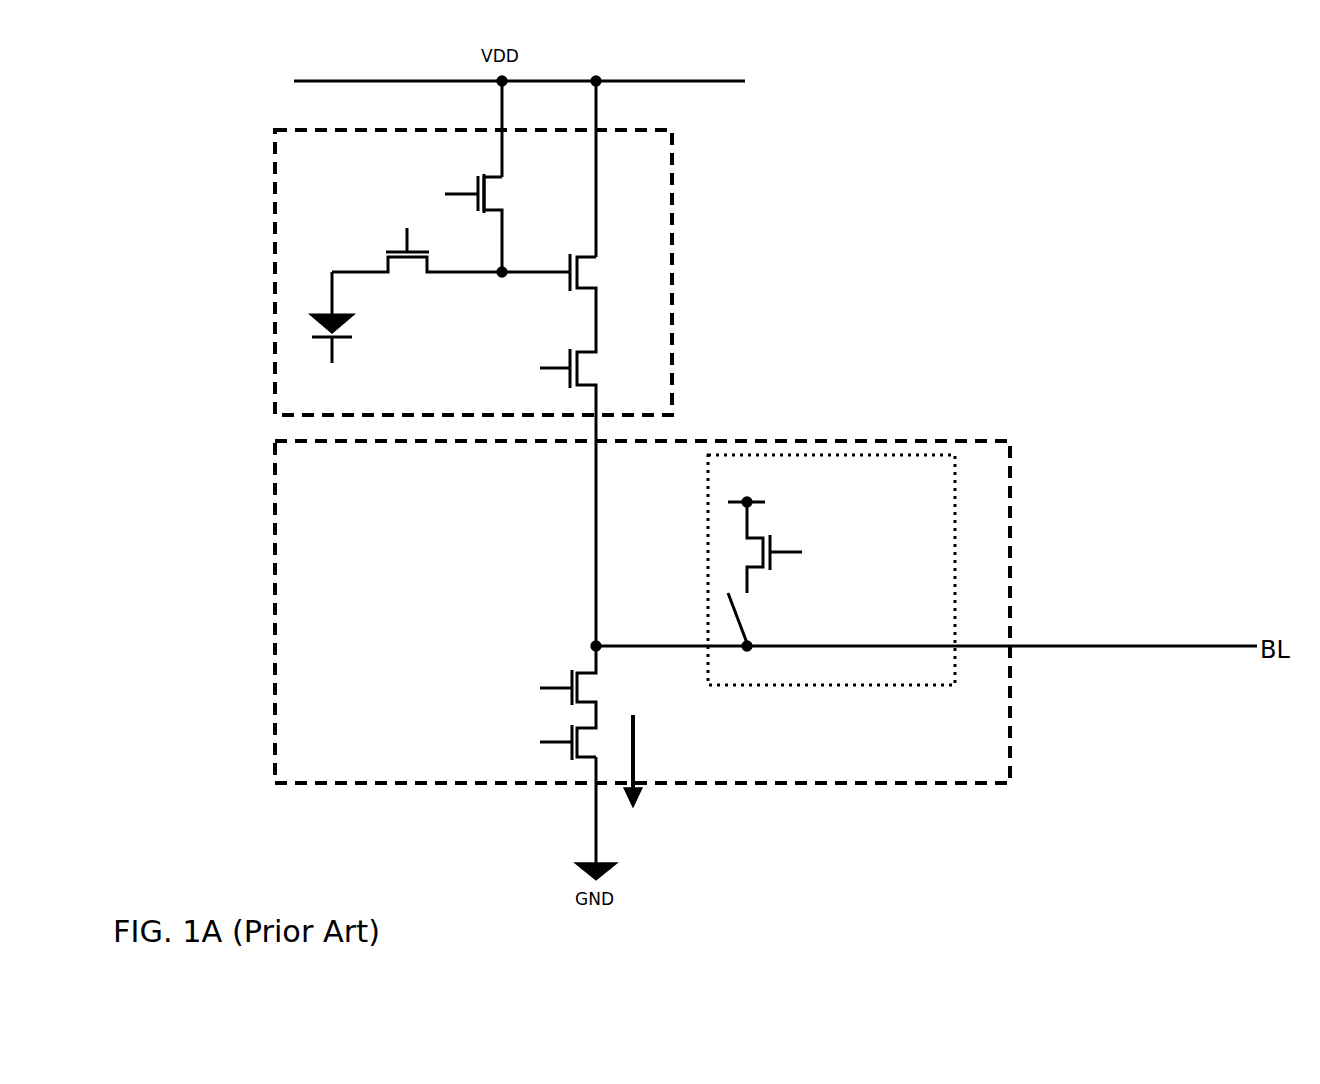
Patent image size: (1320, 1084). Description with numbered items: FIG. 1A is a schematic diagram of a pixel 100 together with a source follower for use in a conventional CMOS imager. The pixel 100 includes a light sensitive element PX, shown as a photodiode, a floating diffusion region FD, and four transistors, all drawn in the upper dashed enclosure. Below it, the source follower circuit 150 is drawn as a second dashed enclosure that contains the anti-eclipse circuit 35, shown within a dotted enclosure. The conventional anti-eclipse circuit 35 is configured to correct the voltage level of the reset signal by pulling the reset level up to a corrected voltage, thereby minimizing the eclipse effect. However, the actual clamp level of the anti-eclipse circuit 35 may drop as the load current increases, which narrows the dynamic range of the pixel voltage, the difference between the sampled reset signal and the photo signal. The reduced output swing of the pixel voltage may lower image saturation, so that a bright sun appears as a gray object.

The pixel 100 is at (686, 269).
The readout circuit 150 is at (906, 437).
The anti-eclipse circuit 35 is at (790, 692).